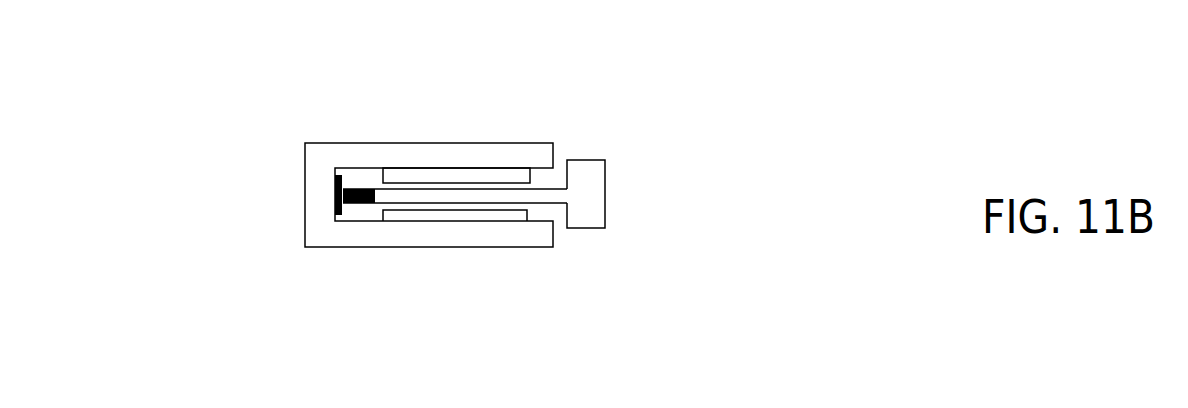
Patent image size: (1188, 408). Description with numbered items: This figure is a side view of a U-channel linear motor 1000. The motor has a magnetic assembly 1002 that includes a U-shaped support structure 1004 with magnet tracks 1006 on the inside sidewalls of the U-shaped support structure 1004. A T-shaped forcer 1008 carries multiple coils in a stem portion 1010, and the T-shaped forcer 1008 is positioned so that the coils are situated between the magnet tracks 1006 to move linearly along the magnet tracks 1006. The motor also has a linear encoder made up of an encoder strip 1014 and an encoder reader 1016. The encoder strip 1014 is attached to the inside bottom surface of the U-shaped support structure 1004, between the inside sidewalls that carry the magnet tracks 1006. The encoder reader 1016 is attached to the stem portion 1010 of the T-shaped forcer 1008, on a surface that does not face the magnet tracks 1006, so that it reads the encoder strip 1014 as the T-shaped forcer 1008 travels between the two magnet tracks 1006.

The U-channel linear motor 1000 is at (647, 128).
The magnetic assembly 1002 is at (430, 170).
The U-shaped support structure 1004 is at (320, 155).
The magnet tracks 1006 is at (400, 182).
The T-shaped forcer 1008 is at (593, 205).
The stem portion 1010 is at (514, 205).
The encoder strip 1014 is at (335, 198).
The encoder reader 1016 is at (350, 200).